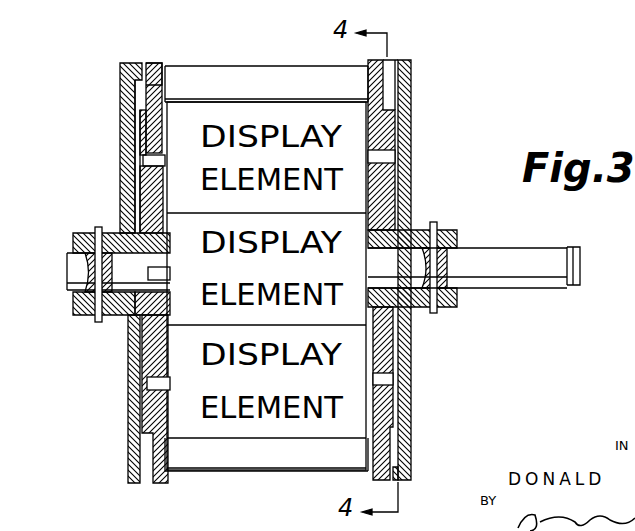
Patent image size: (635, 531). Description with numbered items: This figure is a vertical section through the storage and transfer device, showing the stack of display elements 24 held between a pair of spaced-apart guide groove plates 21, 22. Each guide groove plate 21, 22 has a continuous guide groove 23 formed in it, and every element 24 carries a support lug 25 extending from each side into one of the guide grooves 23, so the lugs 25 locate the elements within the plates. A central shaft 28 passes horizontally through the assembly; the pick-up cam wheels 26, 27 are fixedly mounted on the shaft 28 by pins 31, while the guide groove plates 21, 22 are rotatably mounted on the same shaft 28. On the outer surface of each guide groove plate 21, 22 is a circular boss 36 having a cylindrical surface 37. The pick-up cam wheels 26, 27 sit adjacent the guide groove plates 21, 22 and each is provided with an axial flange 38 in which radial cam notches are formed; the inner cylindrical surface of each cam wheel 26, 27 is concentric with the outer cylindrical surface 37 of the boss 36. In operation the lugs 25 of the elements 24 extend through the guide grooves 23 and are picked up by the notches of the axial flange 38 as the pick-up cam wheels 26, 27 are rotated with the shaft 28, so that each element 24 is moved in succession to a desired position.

The guide groove plate 21 is at (152, 63).
The guide groove plate 22 is at (380, 88).
The guide groove 23 is at (145, 165).
The element 24 is at (152, 220).
The support lug 25 is at (385, 157).
The pick-up cam wheel 26 is at (118, 70).
The pick-up cam wheel 27 is at (406, 62).
The shaft 28 is at (496, 255).
The pin 31 is at (100, 320).
The circular boss 36 is at (141, 135).
The cylindrical surface 37 is at (138, 100).
The axial flange 38 is at (155, 83).